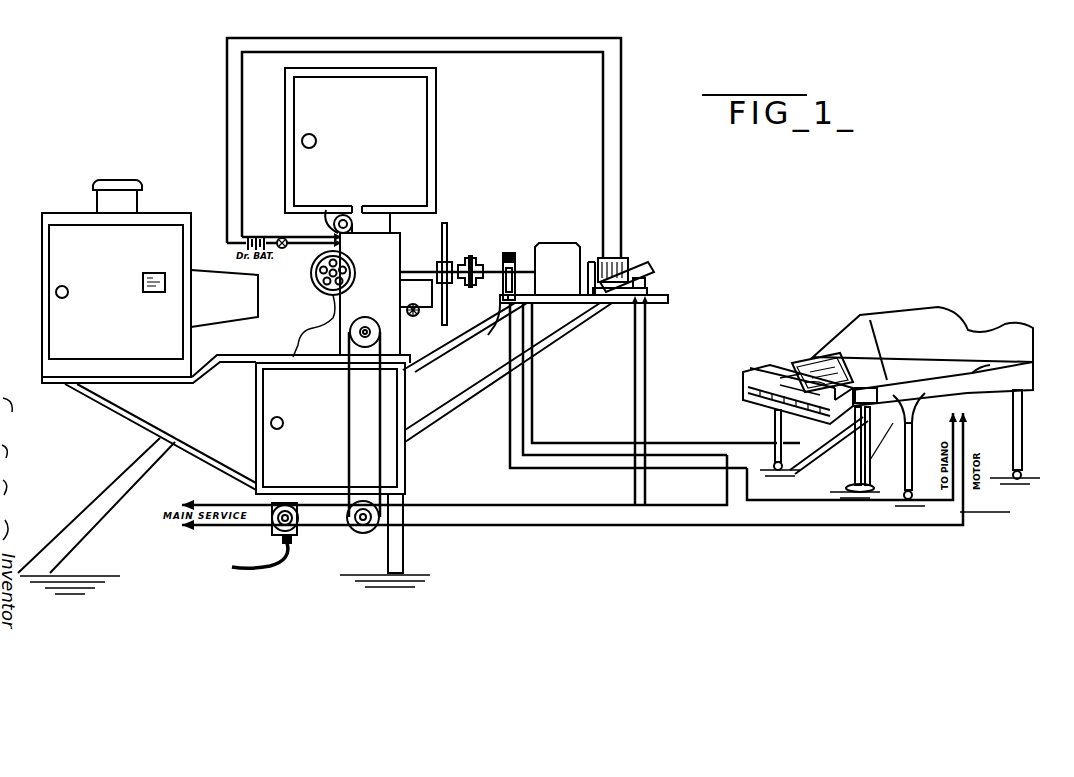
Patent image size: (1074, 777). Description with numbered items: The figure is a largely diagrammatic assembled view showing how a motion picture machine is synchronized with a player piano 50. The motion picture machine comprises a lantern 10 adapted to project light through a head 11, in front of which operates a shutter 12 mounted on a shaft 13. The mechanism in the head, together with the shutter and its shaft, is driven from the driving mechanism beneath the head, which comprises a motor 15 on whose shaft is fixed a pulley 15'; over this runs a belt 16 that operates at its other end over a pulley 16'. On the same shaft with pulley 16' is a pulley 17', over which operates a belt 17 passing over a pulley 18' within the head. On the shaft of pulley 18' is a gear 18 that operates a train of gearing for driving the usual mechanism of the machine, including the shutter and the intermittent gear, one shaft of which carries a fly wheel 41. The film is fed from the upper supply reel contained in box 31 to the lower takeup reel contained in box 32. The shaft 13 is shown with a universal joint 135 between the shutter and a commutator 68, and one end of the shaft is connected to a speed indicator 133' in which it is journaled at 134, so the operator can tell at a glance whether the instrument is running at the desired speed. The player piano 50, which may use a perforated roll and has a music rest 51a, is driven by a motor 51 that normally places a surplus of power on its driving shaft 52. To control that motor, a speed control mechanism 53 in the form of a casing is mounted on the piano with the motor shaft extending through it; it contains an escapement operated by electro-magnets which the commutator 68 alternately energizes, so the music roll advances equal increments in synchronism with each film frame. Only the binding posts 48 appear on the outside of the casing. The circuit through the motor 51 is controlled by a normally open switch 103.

The lantern 10 is at (60, 340).
The head 11 is at (311, 326).
The shutter 12 is at (447, 226).
The shaft 13 is at (413, 275).
The motor 15 is at (257, 545).
The pulley 15' is at (274, 532).
The belt 16 is at (322, 535).
The pulley 16' is at (357, 537).
The belt 17 is at (350, 440).
The pulley 17' is at (371, 530).
The gear 18 is at (362, 282).
The pulley 18' is at (348, 335).
The box 31 is at (397, 128).
The box 32 is at (387, 450).
The fly wheel 41 is at (315, 290).
The binding posts 48 is at (845, 437).
The player piano 50 is at (1020, 383).
The motor 51 is at (830, 407).
The music rest 51a is at (812, 362).
The driving shaft 52 is at (770, 407).
The speed control mechanism 53 is at (878, 400).
The commutator 68 is at (491, 322).
The switch 103 is at (645, 285).
The speed indicator 133' is at (563, 255).
The journal 134 is at (521, 268).
The universal joint 135 is at (470, 286).